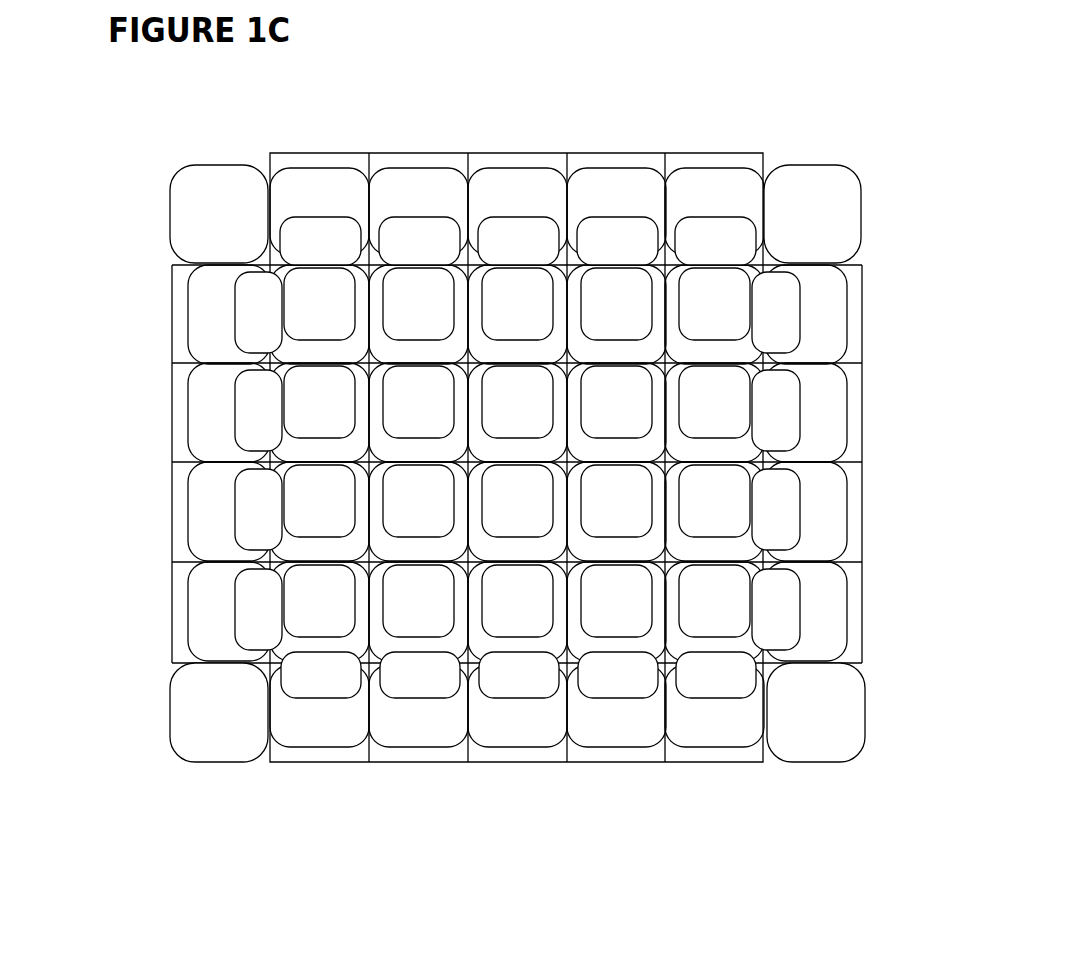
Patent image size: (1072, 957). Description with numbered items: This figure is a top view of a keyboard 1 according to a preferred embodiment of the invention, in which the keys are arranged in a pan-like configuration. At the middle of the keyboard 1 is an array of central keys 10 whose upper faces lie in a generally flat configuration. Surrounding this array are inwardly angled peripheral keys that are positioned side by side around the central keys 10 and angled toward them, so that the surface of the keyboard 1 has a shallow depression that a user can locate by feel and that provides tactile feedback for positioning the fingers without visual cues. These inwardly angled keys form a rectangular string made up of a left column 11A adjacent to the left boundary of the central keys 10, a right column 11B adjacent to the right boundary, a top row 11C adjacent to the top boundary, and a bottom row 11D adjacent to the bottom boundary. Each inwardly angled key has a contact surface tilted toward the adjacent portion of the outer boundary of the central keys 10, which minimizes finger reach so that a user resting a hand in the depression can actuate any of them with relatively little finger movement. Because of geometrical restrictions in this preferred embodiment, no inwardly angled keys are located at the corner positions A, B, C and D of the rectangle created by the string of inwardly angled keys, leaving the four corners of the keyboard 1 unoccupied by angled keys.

The keyboard 1 is at (248, 143).
The central keys 10 is at (412, 515).
The left column 11A is at (178, 597).
The right column 11B is at (852, 319).
The top row 11C is at (647, 167).
The bottom row 11D is at (620, 753).
The position A is at (193, 708).
The position B is at (828, 705).
The position C is at (210, 210).
The position D is at (828, 237).